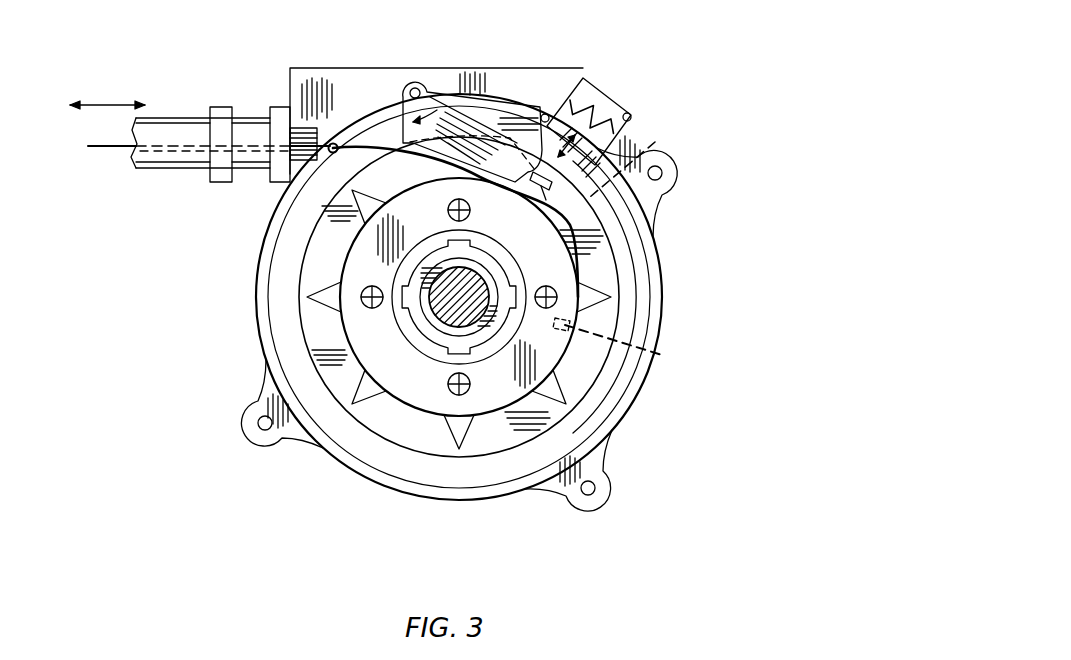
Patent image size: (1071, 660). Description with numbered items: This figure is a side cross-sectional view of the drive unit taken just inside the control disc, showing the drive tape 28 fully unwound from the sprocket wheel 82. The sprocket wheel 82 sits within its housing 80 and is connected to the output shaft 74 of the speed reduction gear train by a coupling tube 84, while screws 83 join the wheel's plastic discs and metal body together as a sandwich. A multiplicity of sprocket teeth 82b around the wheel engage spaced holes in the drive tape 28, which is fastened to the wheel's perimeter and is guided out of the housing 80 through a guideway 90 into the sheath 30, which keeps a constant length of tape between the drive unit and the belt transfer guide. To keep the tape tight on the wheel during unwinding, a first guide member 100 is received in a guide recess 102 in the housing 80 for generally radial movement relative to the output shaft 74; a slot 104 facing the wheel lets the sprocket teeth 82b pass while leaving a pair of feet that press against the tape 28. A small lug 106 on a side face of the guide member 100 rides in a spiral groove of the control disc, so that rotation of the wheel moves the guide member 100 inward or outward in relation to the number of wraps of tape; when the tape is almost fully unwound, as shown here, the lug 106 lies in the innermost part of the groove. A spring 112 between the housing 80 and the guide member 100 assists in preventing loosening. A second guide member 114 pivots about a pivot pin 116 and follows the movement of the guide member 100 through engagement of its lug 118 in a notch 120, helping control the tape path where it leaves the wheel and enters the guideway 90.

The drive tape 28 is at (102, 152).
The sheath 30 is at (172, 125).
The output shaft 74 is at (445, 310).
The housing 80 is at (613, 440).
The sprocket wheel 82 is at (490, 416).
The sprocket teeth 82b is at (602, 297).
The screws 83 is at (361, 300).
The coupling tube 84 is at (500, 281).
The guideway 90 is at (333, 143).
The first guide member 100 is at (551, 110).
The guide recess 102 is at (628, 117).
The slot 104 is at (655, 142).
The lug 106 is at (537, 187).
The spring 112 is at (598, 110).
The second guide member 114 is at (462, 113).
The pivot pin 116 is at (411, 88).
The lug 118 is at (544, 118).
The notch 120 is at (513, 112).